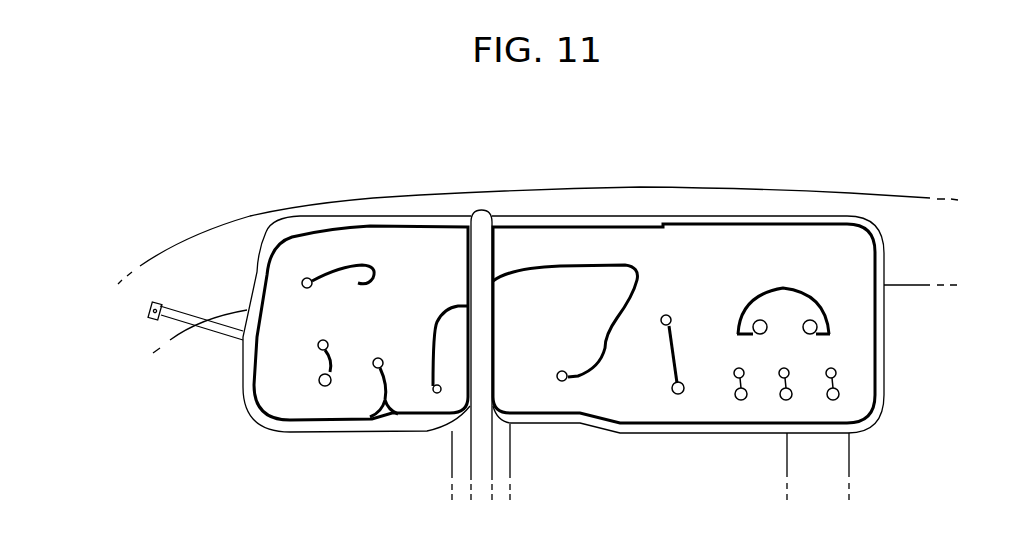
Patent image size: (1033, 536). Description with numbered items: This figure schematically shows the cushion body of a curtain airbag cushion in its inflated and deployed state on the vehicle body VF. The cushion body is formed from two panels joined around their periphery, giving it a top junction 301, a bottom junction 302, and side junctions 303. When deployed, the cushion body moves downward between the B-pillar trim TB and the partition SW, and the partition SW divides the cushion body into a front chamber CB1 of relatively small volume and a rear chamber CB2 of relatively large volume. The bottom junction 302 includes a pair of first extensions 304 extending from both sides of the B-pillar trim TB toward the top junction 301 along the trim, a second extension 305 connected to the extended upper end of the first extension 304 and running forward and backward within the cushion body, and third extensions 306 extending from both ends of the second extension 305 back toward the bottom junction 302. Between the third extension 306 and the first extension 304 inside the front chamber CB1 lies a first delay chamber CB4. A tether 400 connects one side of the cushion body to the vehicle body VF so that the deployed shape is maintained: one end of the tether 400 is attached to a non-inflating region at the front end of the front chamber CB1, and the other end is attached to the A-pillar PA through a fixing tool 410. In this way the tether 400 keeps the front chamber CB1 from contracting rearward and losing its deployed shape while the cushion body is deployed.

The A-pillar PA is at (180, 253).
The tether 400 is at (213, 305).
The fixing tool 410 is at (157, 302).
The side junction 303 is at (243, 350).
The top junction 301 is at (782, 224).
The bottom junction 302 is at (304, 433).
The first extension 304 is at (460, 338).
The second extension 305 is at (547, 263).
The third extension 306 is at (432, 360).
The vehicle body VF is at (642, 197).
The B-pillar trim TB is at (452, 453).
The partition SW is at (490, 457).
The front chamber CB1 is at (335, 318).
The rear chamber CB2 is at (715, 348).
The first delay chamber CB4 is at (445, 353).